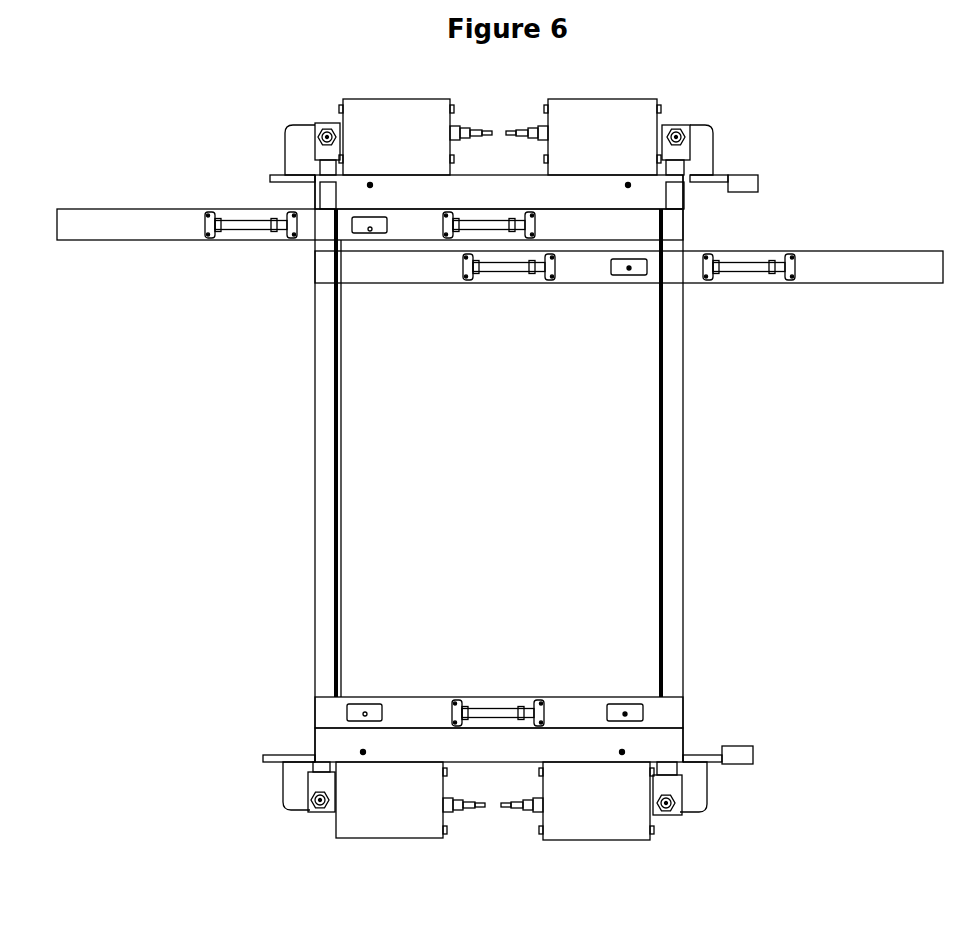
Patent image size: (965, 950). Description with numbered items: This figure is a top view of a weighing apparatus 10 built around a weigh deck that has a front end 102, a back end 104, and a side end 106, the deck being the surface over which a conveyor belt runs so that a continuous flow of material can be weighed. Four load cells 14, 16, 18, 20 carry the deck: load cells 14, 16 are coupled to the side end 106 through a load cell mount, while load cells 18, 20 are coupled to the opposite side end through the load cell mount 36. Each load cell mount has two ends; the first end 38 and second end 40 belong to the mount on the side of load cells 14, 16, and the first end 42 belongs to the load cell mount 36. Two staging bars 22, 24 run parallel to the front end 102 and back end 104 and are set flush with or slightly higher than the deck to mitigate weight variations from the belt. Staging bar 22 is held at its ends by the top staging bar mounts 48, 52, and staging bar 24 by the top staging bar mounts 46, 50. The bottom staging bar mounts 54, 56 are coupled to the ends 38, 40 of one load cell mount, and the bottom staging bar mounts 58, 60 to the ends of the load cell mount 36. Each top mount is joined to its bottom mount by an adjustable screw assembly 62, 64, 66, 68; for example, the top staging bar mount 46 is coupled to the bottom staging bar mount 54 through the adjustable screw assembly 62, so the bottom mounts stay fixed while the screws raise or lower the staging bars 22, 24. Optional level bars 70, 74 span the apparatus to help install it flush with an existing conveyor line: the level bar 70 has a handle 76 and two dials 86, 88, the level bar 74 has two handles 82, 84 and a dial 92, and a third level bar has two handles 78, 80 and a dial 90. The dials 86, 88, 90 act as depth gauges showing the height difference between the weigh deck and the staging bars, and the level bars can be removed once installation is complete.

The weighing apparatus 10 is at (828, 121).
The load cell 14 is at (365, 835).
The load cell 16 is at (596, 835).
The load cell 18 is at (402, 107).
The load cell 20 is at (594, 108).
The staging bar 22 is at (684, 457).
The staging bar 24 is at (318, 415).
The load cell mount 36 is at (720, 178).
The first end of load cell mount 38 is at (270, 757).
The second end of load cell mount 40 is at (698, 760).
The first end of load cell mount 42 is at (902, 256).
The top staging bar mount 46 is at (331, 782).
The top staging bar mount 48 is at (660, 786).
The top staging bar mount 50 is at (338, 151).
The top staging bar mount 52 is at (662, 143).
The bottom staging bar mount 54 is at (286, 793).
The bottom staging bar mount 56 is at (707, 800).
The bottom staging bar mount 58 is at (288, 128).
The bottom staging bar mount 60 is at (705, 133).
The adjustable screw assembly 62 is at (318, 810).
The adjustable screw assembly 64 is at (668, 806).
The adjustable screw assembly 66 is at (327, 126).
The adjustable screw assembly 68 is at (677, 126).
The level bar 70 is at (680, 715).
The level bar 74 is at (86, 215).
The handle 76 is at (494, 712).
The handle 78 is at (515, 272).
The handle 80 is at (752, 270).
The handle 82 is at (243, 218).
The handle 84 is at (490, 220).
The dial 86 is at (366, 710).
The dial 88 is at (626, 712).
The dial 90 is at (629, 275).
The dial 92 is at (370, 226).
The front end of weigh deck 102 is at (668, 560).
The back end of weigh deck 104 is at (332, 547).
The side end of weigh deck 106 is at (494, 763).